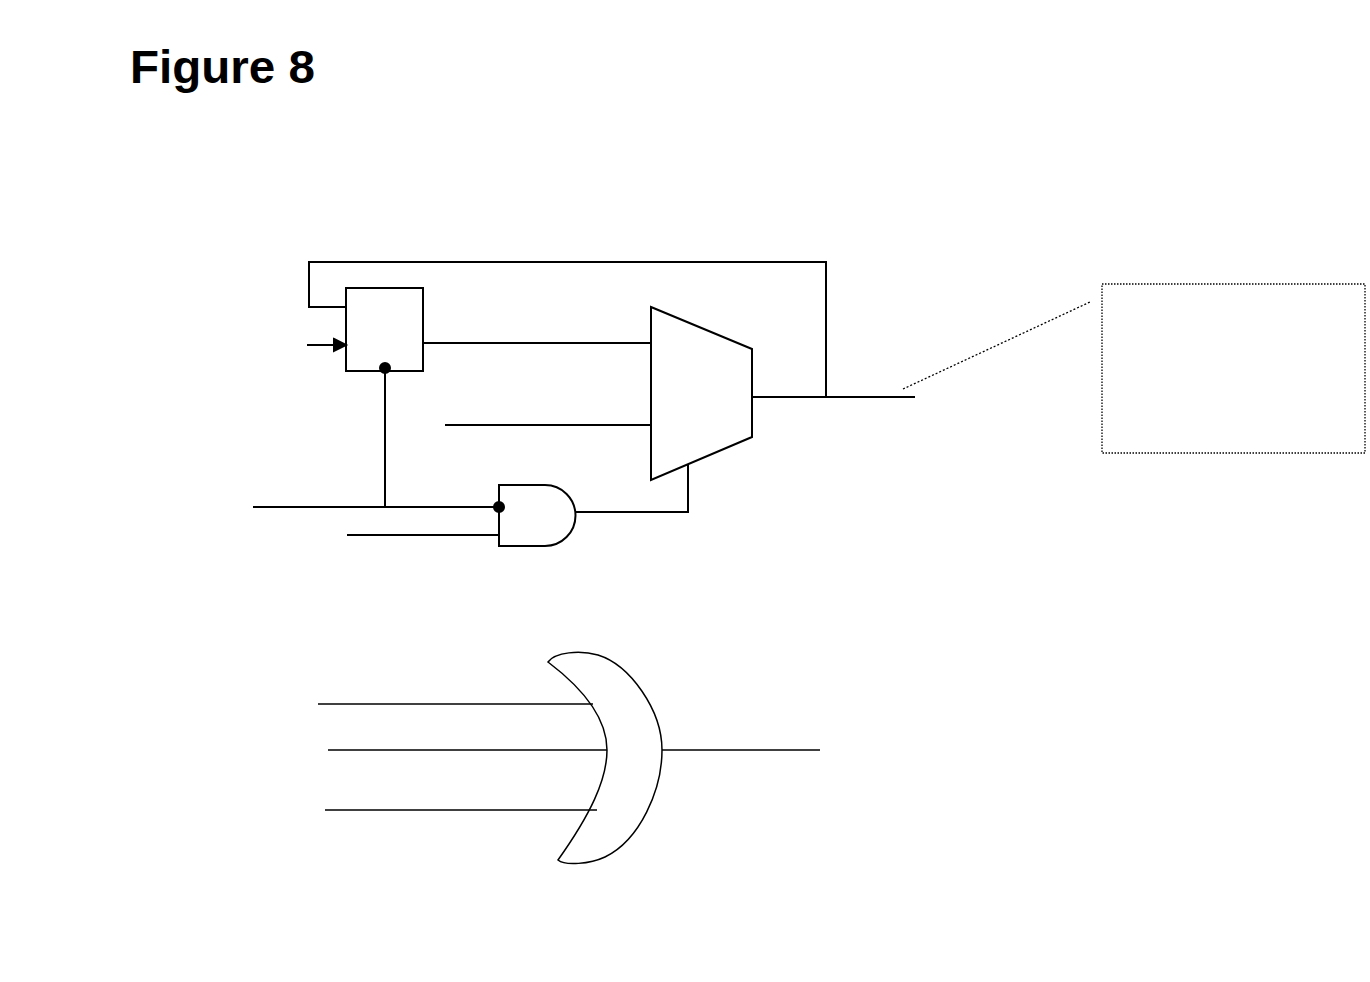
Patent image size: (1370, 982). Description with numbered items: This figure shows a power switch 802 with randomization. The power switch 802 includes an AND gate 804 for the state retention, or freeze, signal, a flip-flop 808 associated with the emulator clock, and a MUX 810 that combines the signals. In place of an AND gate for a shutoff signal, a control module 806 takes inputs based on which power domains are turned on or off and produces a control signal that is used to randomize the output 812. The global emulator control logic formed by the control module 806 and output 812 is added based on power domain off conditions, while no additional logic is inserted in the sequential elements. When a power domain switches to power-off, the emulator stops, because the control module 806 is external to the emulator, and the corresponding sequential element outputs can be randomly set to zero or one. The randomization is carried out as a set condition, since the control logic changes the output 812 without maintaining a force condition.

The power switch 802 is at (635, 469).
The AND gate 804 is at (547, 546).
The control module 806 is at (655, 795).
The flip-flop 808 is at (420, 303).
The MUX 810 is at (713, 453).
The output 812 is at (1185, 282).